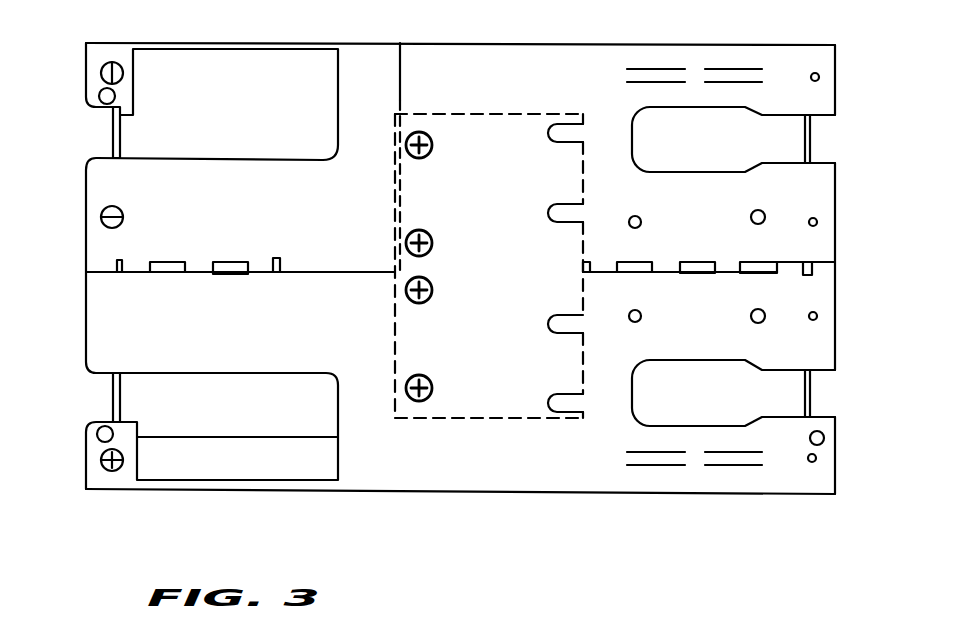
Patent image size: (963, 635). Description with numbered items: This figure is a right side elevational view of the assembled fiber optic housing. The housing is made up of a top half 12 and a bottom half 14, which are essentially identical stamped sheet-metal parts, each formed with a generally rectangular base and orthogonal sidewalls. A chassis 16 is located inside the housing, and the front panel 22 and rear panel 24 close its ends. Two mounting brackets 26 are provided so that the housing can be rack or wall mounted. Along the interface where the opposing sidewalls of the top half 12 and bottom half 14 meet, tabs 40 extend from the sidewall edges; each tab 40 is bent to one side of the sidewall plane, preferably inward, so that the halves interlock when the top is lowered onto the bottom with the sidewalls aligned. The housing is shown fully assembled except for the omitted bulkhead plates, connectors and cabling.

The top half 12 is at (337, 43).
The bottom half 14 is at (570, 493).
The chassis 16 is at (187, 437).
The front panel 22 is at (113, 132).
The rear panel 24 is at (813, 148).
The mounting bracket 26 is at (448, 112).
The tab 40 is at (227, 272).